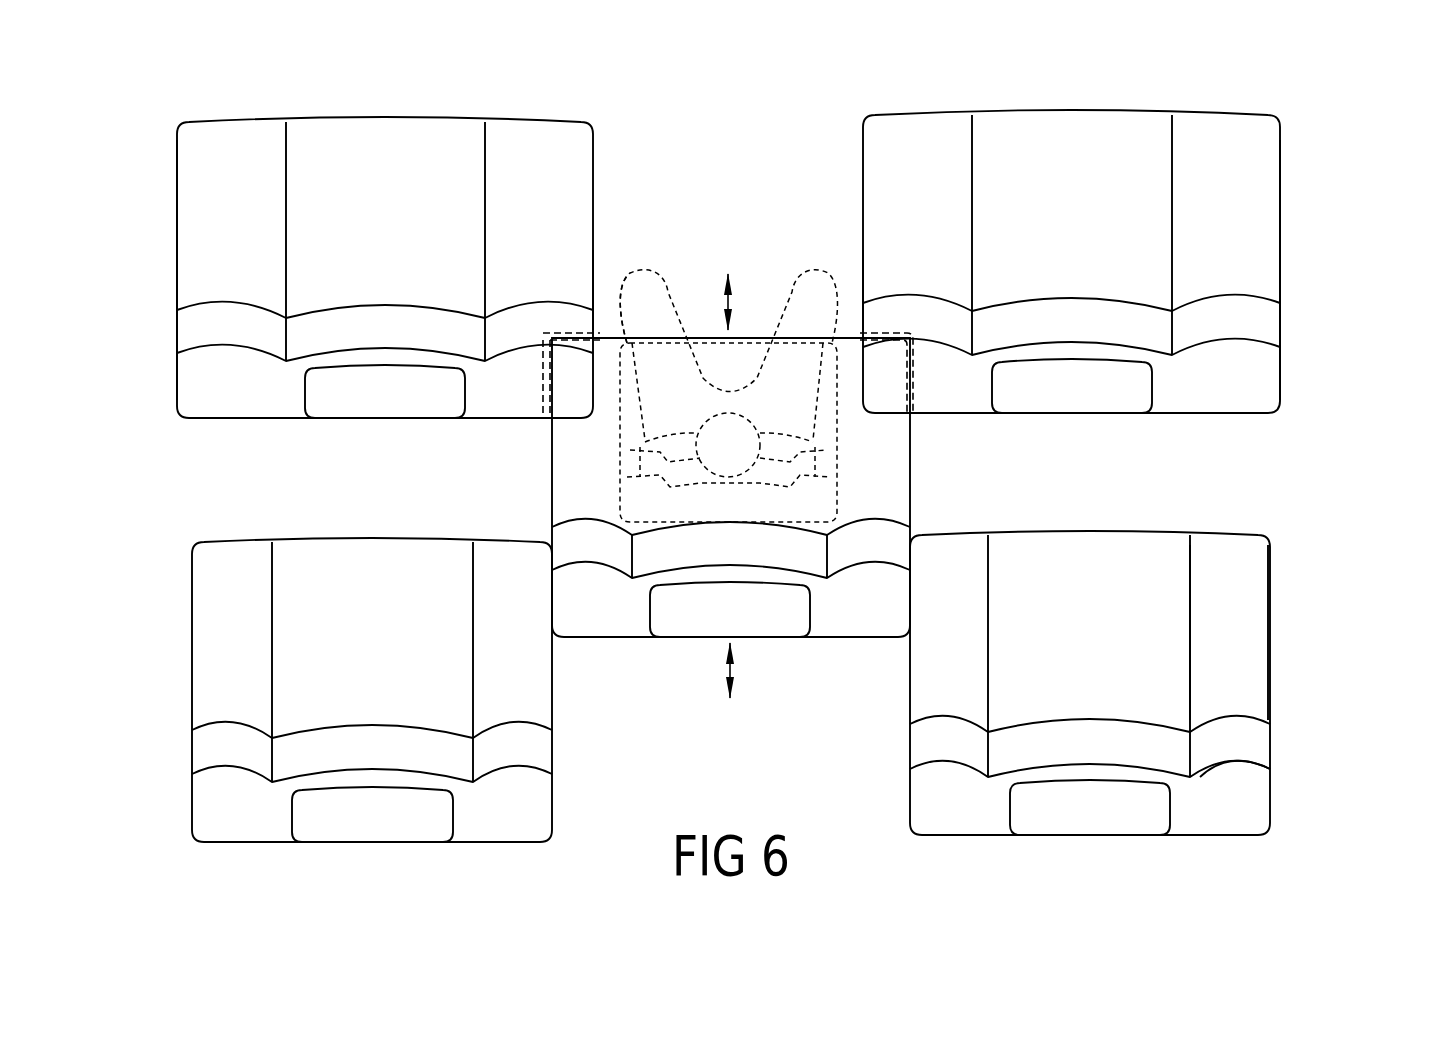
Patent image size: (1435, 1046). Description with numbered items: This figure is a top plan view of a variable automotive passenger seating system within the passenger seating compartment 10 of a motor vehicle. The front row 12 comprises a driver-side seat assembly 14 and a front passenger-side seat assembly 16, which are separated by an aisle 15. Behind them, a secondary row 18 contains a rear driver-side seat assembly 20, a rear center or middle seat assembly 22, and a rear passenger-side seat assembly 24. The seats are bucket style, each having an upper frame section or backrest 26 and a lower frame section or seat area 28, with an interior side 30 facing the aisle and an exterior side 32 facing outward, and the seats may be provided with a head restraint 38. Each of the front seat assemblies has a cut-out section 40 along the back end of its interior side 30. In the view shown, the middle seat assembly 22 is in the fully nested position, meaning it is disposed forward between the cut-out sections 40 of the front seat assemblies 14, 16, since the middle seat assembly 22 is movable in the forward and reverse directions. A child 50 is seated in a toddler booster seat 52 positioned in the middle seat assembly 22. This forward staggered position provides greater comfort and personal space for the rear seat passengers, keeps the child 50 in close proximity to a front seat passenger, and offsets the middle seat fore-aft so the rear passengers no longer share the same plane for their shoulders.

The passenger seating compartment 10 is at (805, 120).
The front row 12 is at (1355, 265).
The driver-side seat assembly 14 is at (402, 152).
The aisle 15 is at (731, 162).
The front passenger-side seat assembly 16 is at (1030, 152).
The secondary row 18 is at (1360, 628).
The rear driver-side seat assembly 20 is at (381, 566).
The middle seat assembly 22 is at (877, 603).
The rear passenger-side seat assembly 24 is at (1119, 572).
The backrest 26 is at (1237, 797).
The seat area 28 is at (1243, 603).
The interior side 30 is at (612, 252).
The exterior side 32 is at (162, 224).
The head restraint 38 is at (1095, 812).
The cut-out section 40 is at (913, 413).
The child 50 is at (670, 283).
The toddler booster seat 52 is at (622, 432).